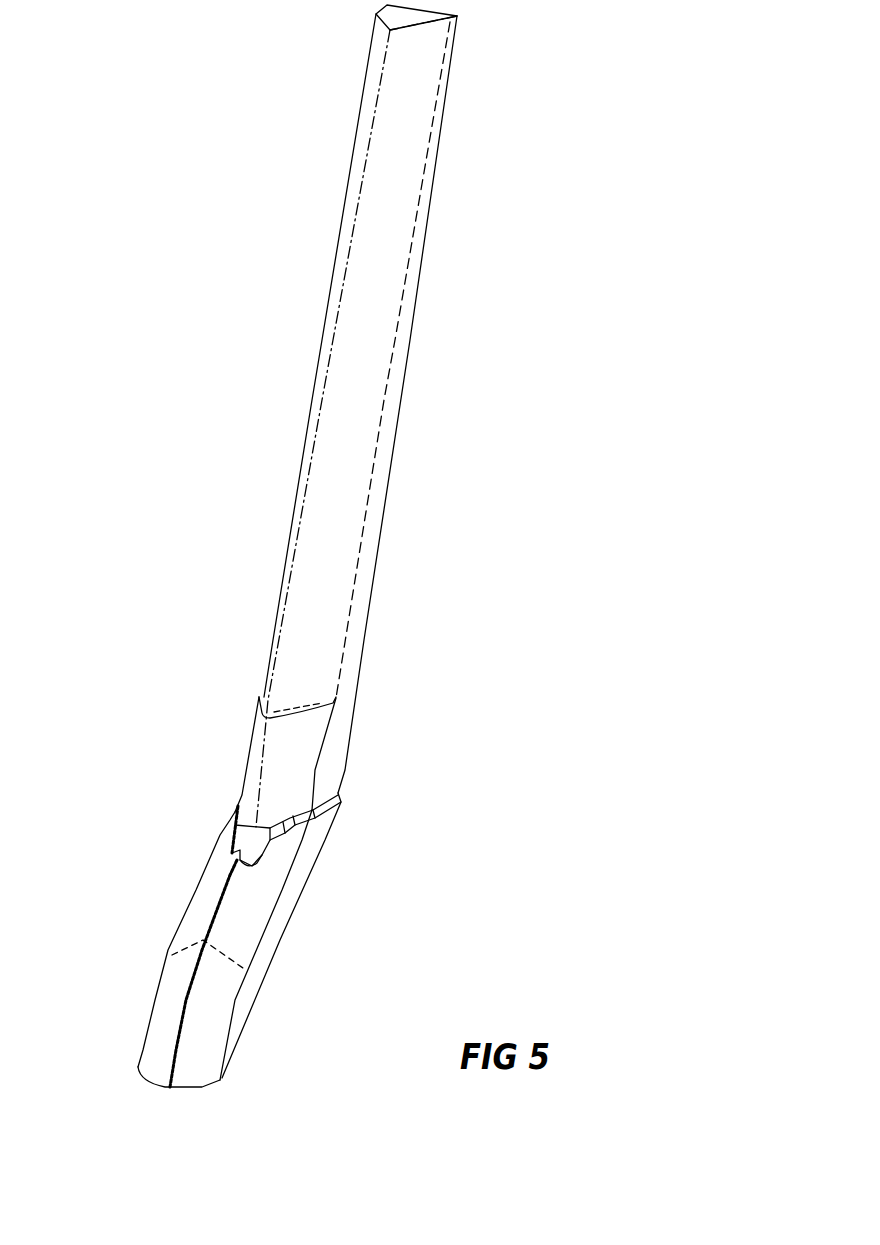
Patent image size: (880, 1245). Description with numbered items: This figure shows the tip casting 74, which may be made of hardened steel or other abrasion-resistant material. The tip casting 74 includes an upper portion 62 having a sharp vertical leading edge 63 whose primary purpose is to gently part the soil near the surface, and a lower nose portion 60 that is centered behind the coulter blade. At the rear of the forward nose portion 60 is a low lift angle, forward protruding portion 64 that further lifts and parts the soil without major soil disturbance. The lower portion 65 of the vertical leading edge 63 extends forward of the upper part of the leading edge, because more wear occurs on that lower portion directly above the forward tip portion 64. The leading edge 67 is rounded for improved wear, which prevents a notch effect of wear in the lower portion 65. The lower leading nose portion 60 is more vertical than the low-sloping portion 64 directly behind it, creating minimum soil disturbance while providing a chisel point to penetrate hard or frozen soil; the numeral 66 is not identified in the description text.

The tip casting 74 is at (472, 269).
The upper portion 62 is at (338, 517).
The leading edge 63 is at (287, 567).
The lower portion of the vertical leading edge 65 is at (287, 768).
The leading edge 67 is at (255, 768).
The forward protruding portion 64 is at (238, 925).
The hosel outer wall 66 is at (248, 996).
The lower nose portion 60 is at (173, 1033).